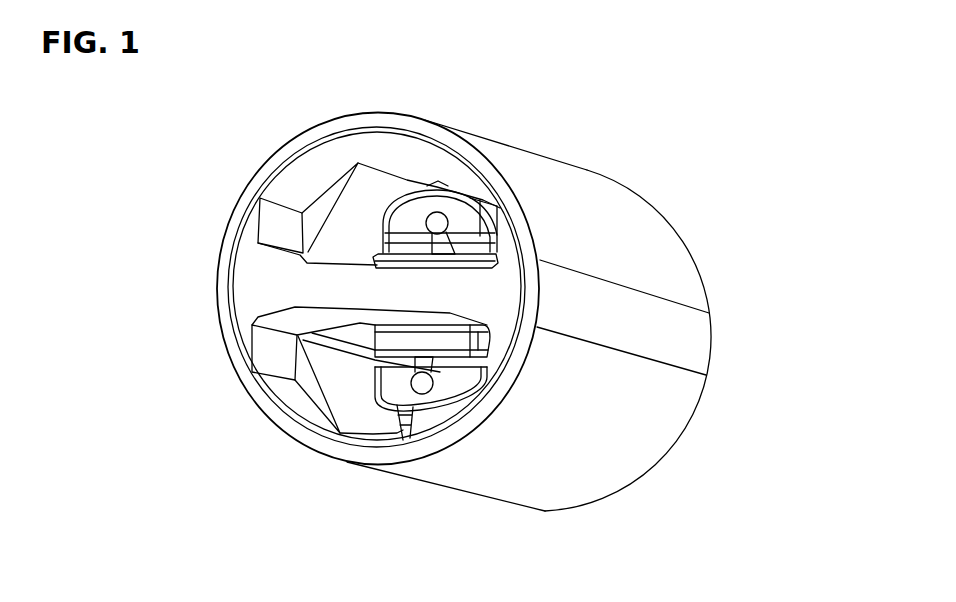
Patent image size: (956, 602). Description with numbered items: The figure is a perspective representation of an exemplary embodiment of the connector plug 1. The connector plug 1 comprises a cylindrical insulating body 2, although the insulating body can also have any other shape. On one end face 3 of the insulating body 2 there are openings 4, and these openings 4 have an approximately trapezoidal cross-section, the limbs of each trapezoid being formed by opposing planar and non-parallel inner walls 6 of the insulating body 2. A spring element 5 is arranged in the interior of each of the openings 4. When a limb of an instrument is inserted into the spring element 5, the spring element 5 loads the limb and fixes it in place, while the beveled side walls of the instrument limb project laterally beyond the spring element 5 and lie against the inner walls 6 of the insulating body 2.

The connector plug 1 is at (782, 457).
The insulating body 2 is at (695, 293).
The end face 3 is at (507, 287).
The openings 4 is at (373, 183).
The spring element 5 is at (404, 430).
The inner walls 6 is at (478, 197).